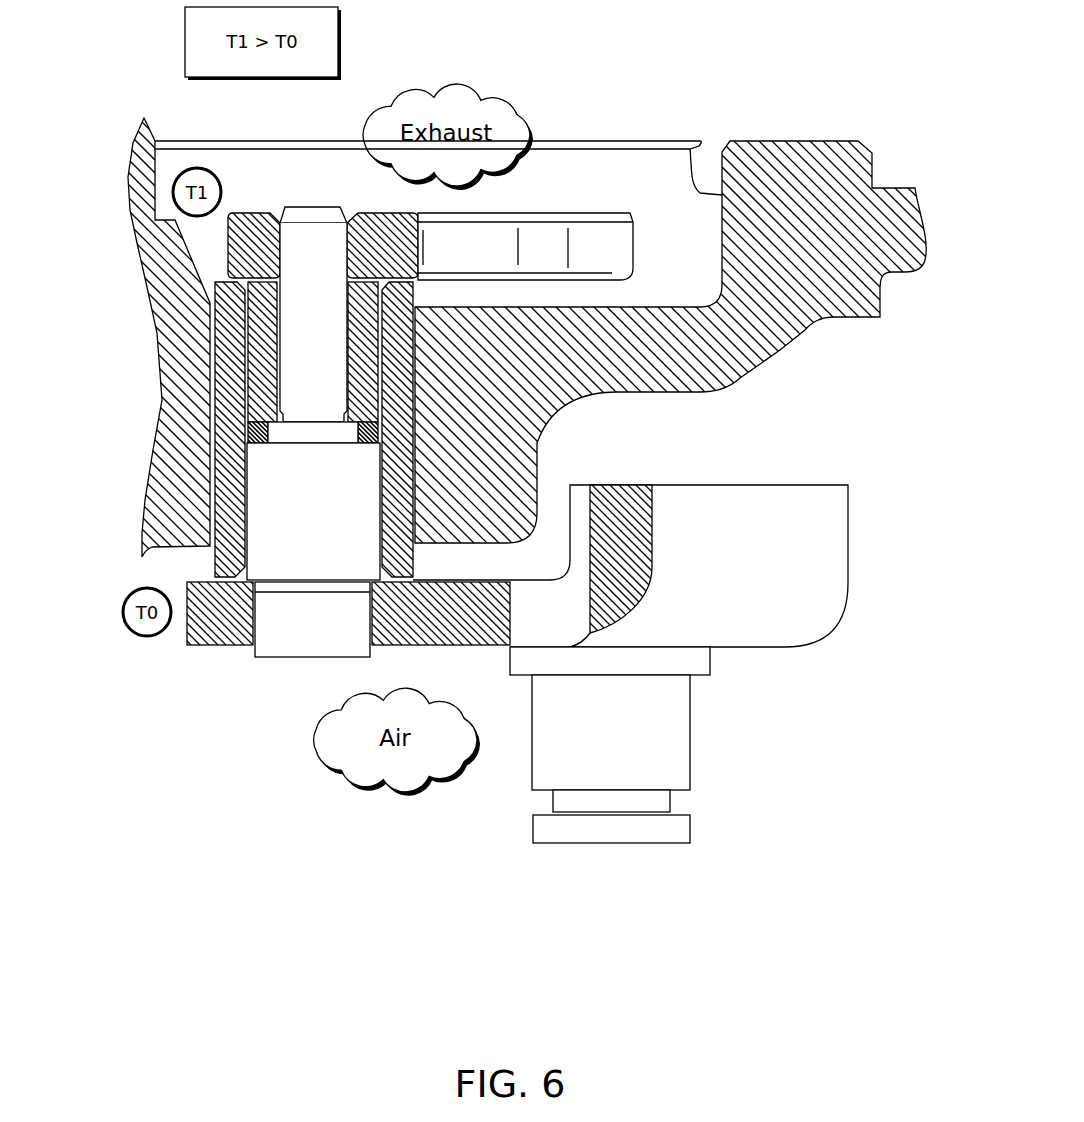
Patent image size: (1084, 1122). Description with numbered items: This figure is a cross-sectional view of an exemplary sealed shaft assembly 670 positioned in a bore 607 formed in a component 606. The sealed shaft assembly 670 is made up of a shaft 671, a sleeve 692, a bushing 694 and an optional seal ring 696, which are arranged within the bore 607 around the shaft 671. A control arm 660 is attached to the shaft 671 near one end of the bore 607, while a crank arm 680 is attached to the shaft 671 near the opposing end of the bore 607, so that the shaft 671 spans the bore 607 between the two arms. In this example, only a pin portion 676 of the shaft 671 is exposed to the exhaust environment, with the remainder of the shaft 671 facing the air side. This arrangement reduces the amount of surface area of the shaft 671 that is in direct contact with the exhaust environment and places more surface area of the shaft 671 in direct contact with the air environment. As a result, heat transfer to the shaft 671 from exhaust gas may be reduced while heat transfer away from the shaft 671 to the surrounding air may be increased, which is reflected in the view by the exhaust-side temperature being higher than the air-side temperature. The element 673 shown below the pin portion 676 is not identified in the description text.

The component 606 is at (542, 385).
The bore 607 is at (417, 547).
The control arm 660 is at (542, 430).
The sealed shaft assembly 670 is at (210, 703).
The shaft 671 is at (313, 208).
The sensor body 673 is at (311, 497).
The pin portion 676 is at (313, 322).
The crank arm 680 is at (529, 213).
The sleeve 692 is at (260, 357).
The bushing 694 is at (223, 373).
The seal ring 696 is at (217, 408).